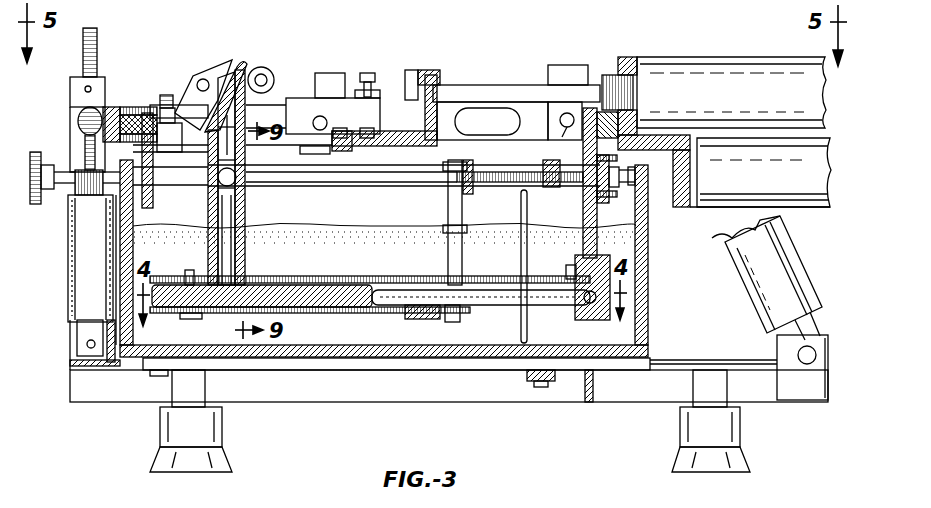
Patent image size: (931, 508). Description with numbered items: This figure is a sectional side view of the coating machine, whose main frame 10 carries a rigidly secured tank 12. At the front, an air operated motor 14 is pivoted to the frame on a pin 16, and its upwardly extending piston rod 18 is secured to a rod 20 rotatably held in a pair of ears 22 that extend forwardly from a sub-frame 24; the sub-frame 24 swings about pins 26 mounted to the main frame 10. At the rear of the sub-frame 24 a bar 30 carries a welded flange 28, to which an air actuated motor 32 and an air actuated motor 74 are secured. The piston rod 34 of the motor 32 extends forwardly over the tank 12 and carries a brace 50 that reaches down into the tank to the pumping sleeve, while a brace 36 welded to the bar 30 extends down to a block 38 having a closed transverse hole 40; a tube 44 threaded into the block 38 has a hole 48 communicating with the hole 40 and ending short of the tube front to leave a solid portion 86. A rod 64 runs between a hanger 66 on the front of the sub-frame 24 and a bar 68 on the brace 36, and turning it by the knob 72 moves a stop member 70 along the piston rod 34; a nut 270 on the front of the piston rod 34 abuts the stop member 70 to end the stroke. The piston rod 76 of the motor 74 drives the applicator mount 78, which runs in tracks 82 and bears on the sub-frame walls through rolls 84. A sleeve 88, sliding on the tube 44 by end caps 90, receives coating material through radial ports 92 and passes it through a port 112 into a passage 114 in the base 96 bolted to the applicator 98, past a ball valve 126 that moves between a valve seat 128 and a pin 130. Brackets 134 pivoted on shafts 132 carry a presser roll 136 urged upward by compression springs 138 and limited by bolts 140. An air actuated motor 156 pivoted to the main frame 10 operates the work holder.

The main frame 10 is at (100, 410).
The tank 12 is at (404, 360).
The air operated motor 14 is at (84, 251).
The pin 16 is at (86, 344).
The piston rod 18 is at (85, 165).
The rod 20 is at (80, 121).
The ears 22 is at (100, 100).
The sub-frame 24 is at (540, 98).
The pins 26 is at (560, 126).
The flange 28 is at (684, 203).
The bar 30 is at (592, 132).
The air actuated motor 32 is at (786, 185).
The piston rod 34 is at (648, 186).
The brace 36 is at (583, 216).
The block 38 is at (570, 272).
The hole 40 is at (588, 316).
The tube 44 is at (500, 290).
The hole 48 is at (516, 304).
The brace 50 is at (448, 203).
The rod 64 is at (332, 178).
The hanger 66 is at (150, 204).
The bar 68 is at (603, 197).
The stop member 70 is at (548, 188).
The knob 72 is at (36, 204).
The air actuated motor 74 is at (744, 70).
The piston rod 76 is at (490, 88).
The applicator mount 78 is at (396, 146).
The tracks 82 is at (476, 112).
The rolls 84 is at (163, 152).
The solid portion 86 is at (312, 310).
The sleeve 88 is at (352, 276).
The end caps 90 is at (188, 270).
The radial ports 92 is at (386, 292).
The base 96 is at (246, 209).
The applicator 98 is at (225, 80).
The port 112 is at (246, 274).
The passage 114 is at (232, 248).
The ball valve 126 is at (219, 185).
The valve seat 128 is at (246, 186).
The pin 130 is at (246, 162).
The shaft 132 is at (331, 120).
The bracket 134 is at (320, 85).
The roll 136 is at (265, 67).
The compression spring 138 is at (320, 116).
The bolt 140 is at (366, 76).
The air actuated motor 156 is at (752, 295).
The nut 270 is at (470, 165).